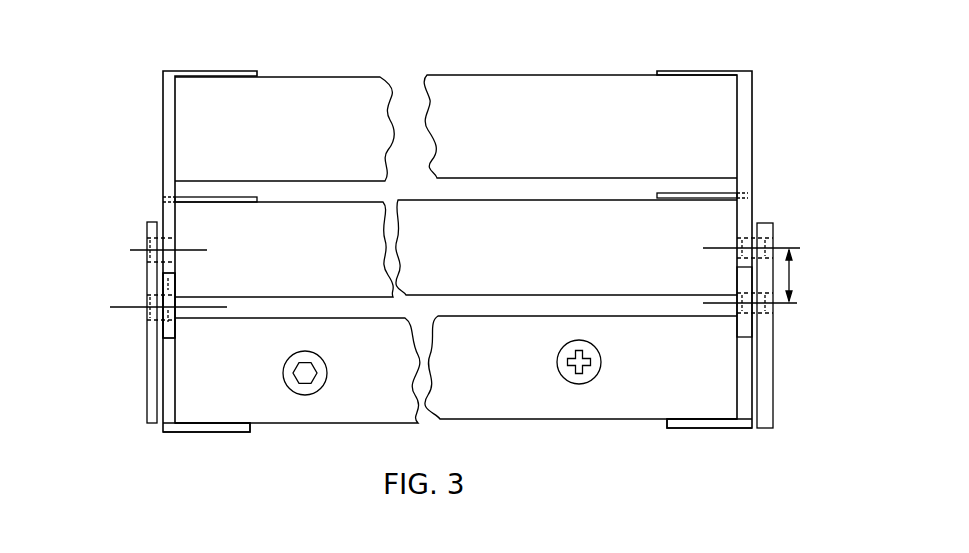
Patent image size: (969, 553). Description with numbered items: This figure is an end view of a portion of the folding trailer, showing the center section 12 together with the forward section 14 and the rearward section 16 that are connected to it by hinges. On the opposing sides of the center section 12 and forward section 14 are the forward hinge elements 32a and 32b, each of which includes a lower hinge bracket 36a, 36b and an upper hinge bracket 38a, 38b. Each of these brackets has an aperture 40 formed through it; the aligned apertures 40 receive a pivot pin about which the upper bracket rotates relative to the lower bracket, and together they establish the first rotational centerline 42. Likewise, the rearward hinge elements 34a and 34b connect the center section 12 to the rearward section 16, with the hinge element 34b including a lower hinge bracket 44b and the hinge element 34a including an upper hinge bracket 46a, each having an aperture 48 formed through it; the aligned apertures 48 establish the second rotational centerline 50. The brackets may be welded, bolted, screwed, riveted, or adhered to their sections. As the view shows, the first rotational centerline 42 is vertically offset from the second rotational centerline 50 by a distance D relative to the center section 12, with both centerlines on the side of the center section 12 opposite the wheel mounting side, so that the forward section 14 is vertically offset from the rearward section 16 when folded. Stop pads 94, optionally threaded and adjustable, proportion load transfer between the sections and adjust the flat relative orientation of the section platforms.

The center section 12 is at (540, 378).
The forward section 14 is at (540, 102).
The rearward section 16 is at (510, 250).
The forward hinge element 32a is at (783, 353).
The forward hinge element 32b is at (138, 390).
The rearward hinge element 34a is at (725, 285).
The rearward hinge element 34b is at (190, 273).
The lower hinge bracket 36a is at (767, 390).
The lower hinge bracket 36b is at (153, 422).
The upper hinge bracket 38a is at (747, 80).
The upper hinge bracket 38b is at (172, 103).
The aperture 40 is at (148, 242).
The first rotational centerline 42 is at (130, 250).
The lower hinge bracket 44b is at (173, 287).
The upper hinge bracket 46a is at (720, 193).
The aperture 48 is at (148, 322).
The second rotational centerline 50 is at (120, 310).
The stop pad 94 is at (328, 370).
The distance D is at (804, 275).